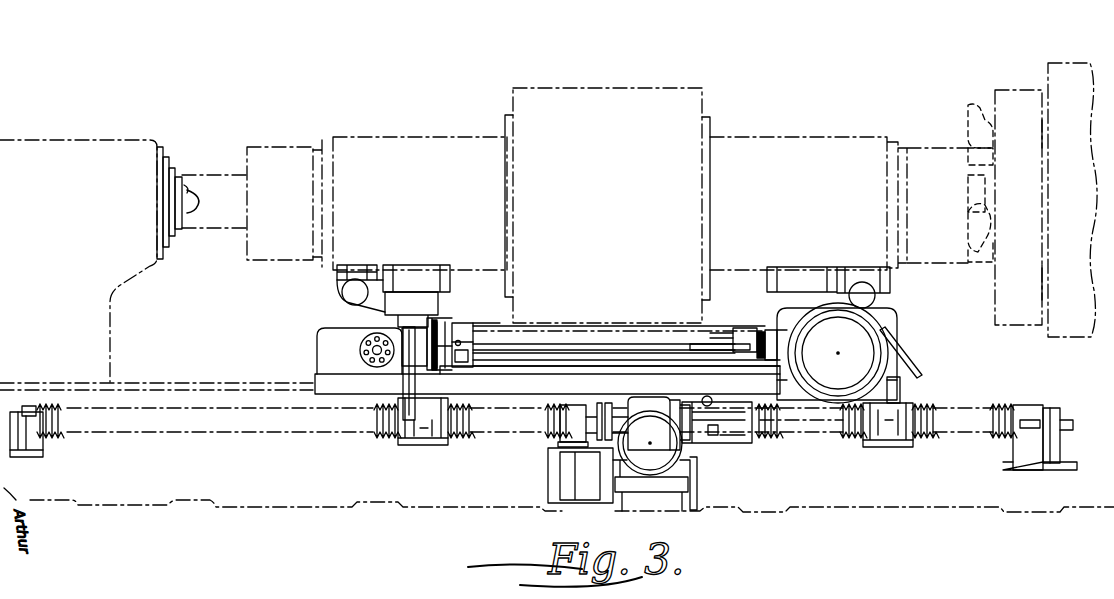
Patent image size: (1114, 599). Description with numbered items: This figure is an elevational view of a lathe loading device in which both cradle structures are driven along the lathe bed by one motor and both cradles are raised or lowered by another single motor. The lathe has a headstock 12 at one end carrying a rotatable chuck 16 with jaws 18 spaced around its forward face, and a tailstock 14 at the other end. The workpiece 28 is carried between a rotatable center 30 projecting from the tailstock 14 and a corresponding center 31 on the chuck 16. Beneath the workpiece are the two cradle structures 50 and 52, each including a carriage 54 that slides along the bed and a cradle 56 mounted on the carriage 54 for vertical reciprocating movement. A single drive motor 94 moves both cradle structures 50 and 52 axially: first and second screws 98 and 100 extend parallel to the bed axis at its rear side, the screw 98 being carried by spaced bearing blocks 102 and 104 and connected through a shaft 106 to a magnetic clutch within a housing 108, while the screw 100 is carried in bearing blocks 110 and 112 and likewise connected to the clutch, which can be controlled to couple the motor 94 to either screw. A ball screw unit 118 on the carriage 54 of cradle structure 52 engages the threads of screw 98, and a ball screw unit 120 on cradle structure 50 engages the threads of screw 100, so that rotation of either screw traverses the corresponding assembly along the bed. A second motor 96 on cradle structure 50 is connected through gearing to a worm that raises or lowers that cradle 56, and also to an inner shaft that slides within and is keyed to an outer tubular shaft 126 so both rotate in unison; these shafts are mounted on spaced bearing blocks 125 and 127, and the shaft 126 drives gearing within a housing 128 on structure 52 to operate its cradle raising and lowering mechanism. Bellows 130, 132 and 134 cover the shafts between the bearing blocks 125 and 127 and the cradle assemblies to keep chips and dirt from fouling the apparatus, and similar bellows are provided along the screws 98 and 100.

The headstock 12 is at (1068, 63).
The tailstock 14 is at (70, 138).
The chuck 16 is at (1018, 90).
The jaws 18 is at (975, 130).
The workpiece 28 is at (686, 88).
The center 30 is at (196, 214).
The center 31 is at (970, 214).
The cradle structure 50 is at (893, 319).
The cradle structure 52 is at (341, 339).
The carriage 54 is at (322, 371).
The cradle 56 is at (436, 301).
The drive motor 94 is at (653, 462).
The motor 96 is at (865, 352).
The first screw 98 is at (294, 425).
The second screw 100 is at (828, 427).
The bearing block 102 is at (44, 447).
The bearing block 104 is at (570, 430).
The shaft 106 is at (610, 400).
The housing 108 is at (648, 397).
The bearing block 110 is at (1013, 452).
The bearing block 112 is at (730, 443).
The ball screw unit 118 is at (426, 446).
The ball screw unit 120 is at (897, 448).
The bearing block 125 is at (468, 328).
The outer tubular shaft 126 is at (618, 347).
The bearing block 127 is at (750, 317).
The housing 128 is at (332, 344).
The bellows 130 is at (393, 296).
The bellows 132 is at (490, 330).
The bellows 134 is at (626, 363).